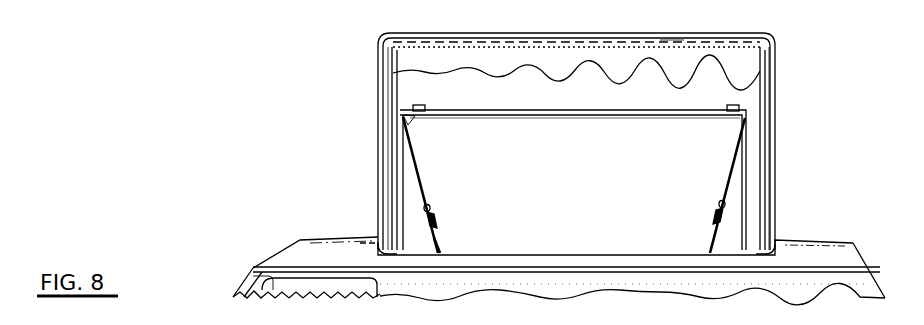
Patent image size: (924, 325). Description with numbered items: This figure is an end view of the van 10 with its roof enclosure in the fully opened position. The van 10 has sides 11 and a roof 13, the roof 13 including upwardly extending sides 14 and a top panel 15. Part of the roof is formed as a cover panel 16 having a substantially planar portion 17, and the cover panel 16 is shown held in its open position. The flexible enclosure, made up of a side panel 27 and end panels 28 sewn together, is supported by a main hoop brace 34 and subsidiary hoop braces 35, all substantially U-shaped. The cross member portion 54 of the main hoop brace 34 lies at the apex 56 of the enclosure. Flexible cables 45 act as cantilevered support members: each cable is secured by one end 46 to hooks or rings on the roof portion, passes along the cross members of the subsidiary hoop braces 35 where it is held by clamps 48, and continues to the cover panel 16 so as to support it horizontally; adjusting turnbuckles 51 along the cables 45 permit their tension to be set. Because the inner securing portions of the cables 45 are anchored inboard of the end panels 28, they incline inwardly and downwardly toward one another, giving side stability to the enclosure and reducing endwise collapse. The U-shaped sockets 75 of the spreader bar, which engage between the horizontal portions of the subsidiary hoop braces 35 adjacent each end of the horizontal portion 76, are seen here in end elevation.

The van 10 is at (240, 240).
The sides 11 is at (500, 282).
The roof 13 is at (865, 262).
The upwardly extending sides 14 is at (820, 243).
The top panel 15 is at (817, 319).
The cover panel 16 is at (732, 324).
The substantially planar portion 17 is at (704, 317).
The side panel 27 is at (530, 84).
The end panels 28 is at (388, 90).
The main hoop brace 34 is at (378, 100).
The subsidiary hoop brace 35 is at (640, 112).
The flexible cables 45 is at (420, 168).
The cable end 46 is at (439, 248).
The clamps 48 is at (412, 116).
The adjusting turnbuckles 51 is at (438, 210).
The cross member portion 54 is at (766, 35).
The apex 56 is at (672, 48).
The U-shaped sockets 75 is at (418, 104).
The horizontal portion 76 is at (562, 113).